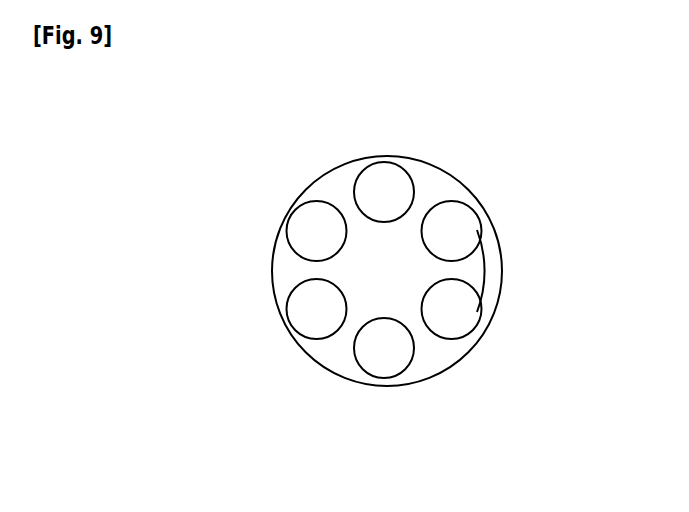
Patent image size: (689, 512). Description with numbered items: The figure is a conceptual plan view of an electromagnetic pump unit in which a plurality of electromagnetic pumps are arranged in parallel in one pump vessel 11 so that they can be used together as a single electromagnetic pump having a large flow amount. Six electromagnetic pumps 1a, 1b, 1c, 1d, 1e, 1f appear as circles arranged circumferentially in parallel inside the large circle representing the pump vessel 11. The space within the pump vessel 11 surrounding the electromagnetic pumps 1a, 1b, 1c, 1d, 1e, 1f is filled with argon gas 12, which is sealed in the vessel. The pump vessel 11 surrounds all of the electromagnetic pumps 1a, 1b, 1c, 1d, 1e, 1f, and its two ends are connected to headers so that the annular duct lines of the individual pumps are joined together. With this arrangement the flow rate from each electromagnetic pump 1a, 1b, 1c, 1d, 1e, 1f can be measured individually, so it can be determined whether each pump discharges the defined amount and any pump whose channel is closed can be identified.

The pump vessel 11 is at (499, 246).
The argon gas 12 is at (483, 277).
The electromagnetic pump 1a is at (300, 307).
The electromagnetic pump 1b is at (308, 228).
The electromagnetic pump 1c is at (392, 172).
The electromagnetic pump 1d is at (461, 232).
The electromagnetic pump 1e is at (461, 332).
The electromagnetic pump 1f is at (383, 362).